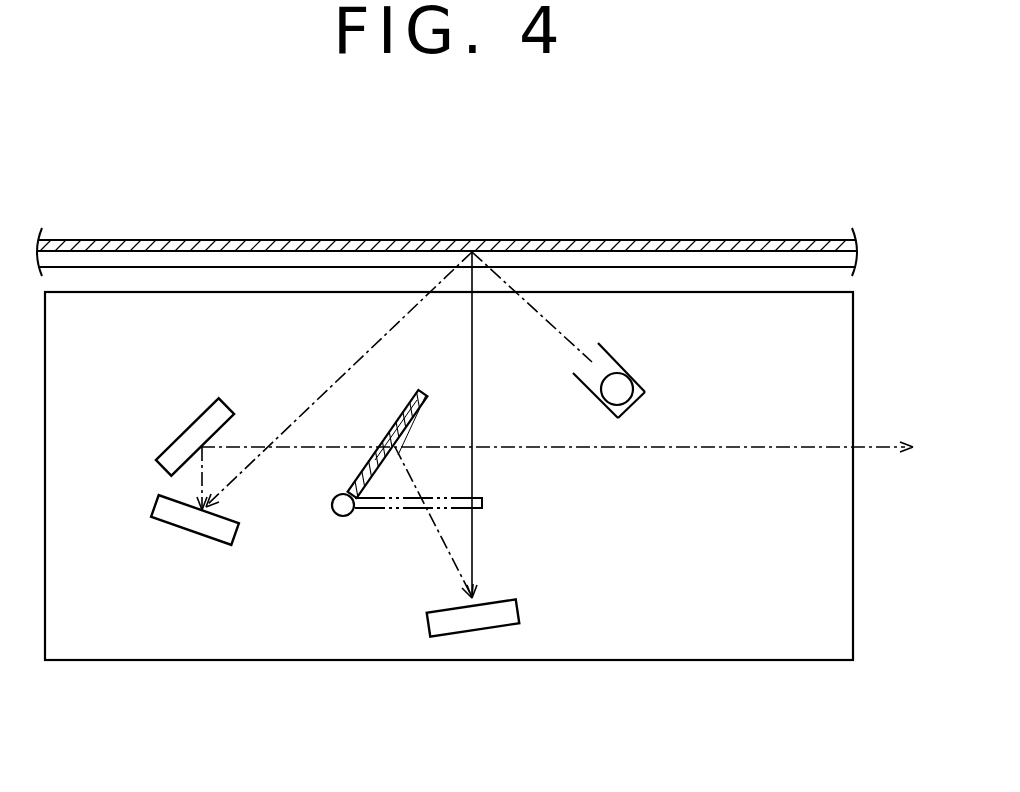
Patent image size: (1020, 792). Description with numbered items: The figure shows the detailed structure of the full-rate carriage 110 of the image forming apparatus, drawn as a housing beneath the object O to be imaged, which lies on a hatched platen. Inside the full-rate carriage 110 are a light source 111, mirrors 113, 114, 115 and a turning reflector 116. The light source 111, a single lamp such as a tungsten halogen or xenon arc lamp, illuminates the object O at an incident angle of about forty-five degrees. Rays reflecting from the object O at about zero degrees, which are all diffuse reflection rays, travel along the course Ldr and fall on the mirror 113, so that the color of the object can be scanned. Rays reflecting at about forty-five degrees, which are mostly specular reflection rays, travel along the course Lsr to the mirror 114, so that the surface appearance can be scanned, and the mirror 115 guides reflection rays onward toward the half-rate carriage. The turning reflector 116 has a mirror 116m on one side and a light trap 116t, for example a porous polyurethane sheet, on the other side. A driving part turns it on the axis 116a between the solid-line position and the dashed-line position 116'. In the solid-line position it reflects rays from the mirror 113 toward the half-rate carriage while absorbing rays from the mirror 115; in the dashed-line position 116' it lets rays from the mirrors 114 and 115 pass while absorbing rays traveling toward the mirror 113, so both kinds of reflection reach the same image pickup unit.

The object to be imaged O is at (636, 240).
The full-rate carriage 110 is at (853, 360).
The light source 111 is at (631, 401).
The mirror 113 is at (512, 610).
The mirror 114 is at (220, 538).
The mirror 115 is at (220, 411).
The turning reflector 116 is at (406, 401).
The light trap 116t is at (393, 434).
The mirror 116m is at (425, 410).
The dashed-line position of turning reflector 116' is at (465, 496).
The axis 116a is at (343, 516).
The course of specular reflection rays Lsr is at (334, 384).
The course of diffuse reflection rays Ldr is at (459, 425).